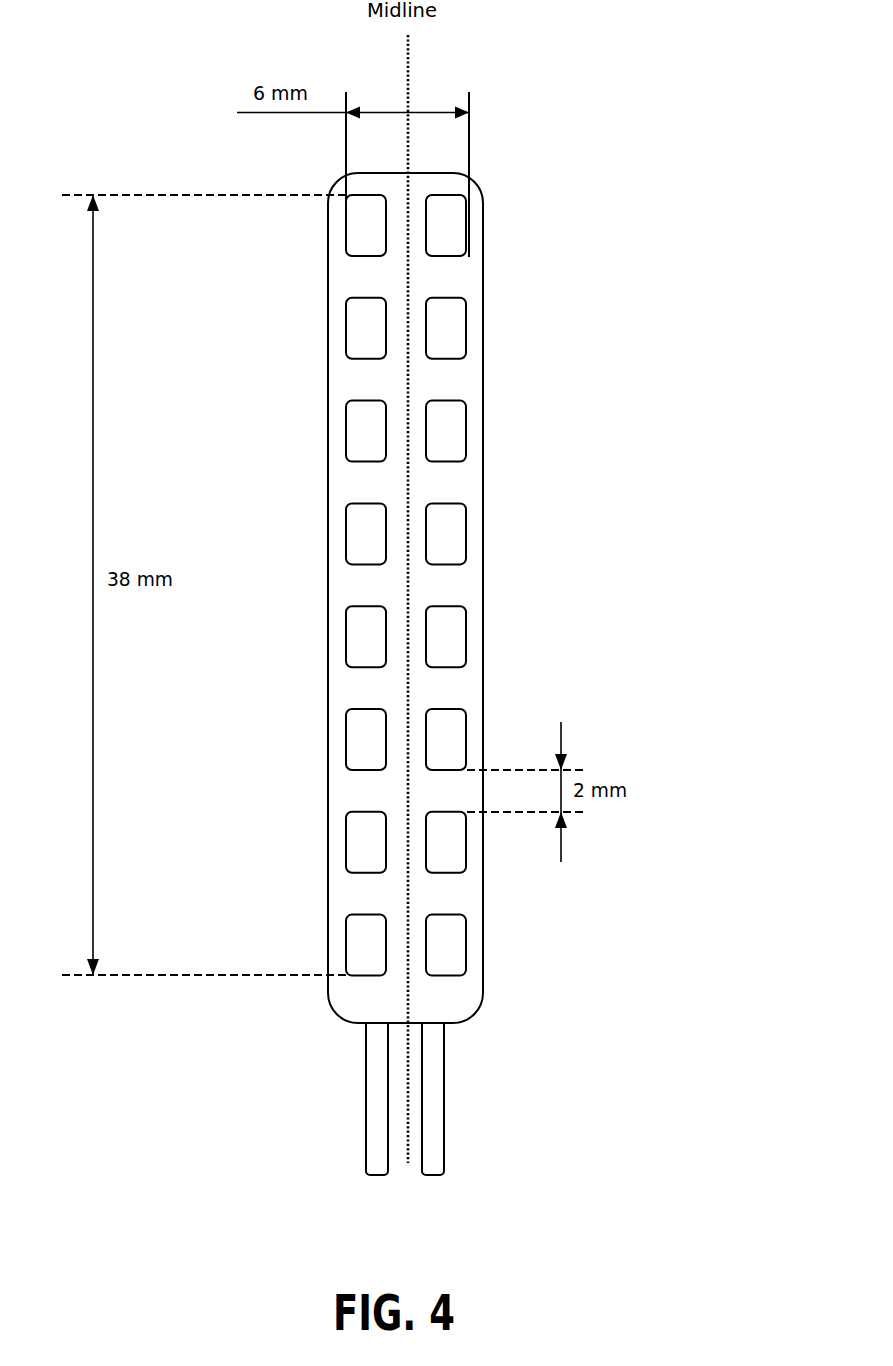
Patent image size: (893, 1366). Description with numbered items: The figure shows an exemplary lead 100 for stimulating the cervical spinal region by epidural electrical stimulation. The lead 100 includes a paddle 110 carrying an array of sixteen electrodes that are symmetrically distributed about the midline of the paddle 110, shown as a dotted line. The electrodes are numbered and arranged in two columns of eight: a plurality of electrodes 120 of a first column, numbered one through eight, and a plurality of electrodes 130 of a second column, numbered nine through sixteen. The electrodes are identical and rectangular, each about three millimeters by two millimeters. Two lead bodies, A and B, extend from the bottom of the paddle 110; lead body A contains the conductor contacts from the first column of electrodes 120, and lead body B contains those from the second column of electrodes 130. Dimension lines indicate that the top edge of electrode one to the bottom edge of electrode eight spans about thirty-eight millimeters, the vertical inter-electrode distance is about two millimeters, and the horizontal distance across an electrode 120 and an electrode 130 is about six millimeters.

The lead 100 is at (570, 145).
The paddle 110 is at (484, 612).
The electrodes of a first column 120 is at (353, 252).
The electrodes of a second column 130 is at (468, 440).